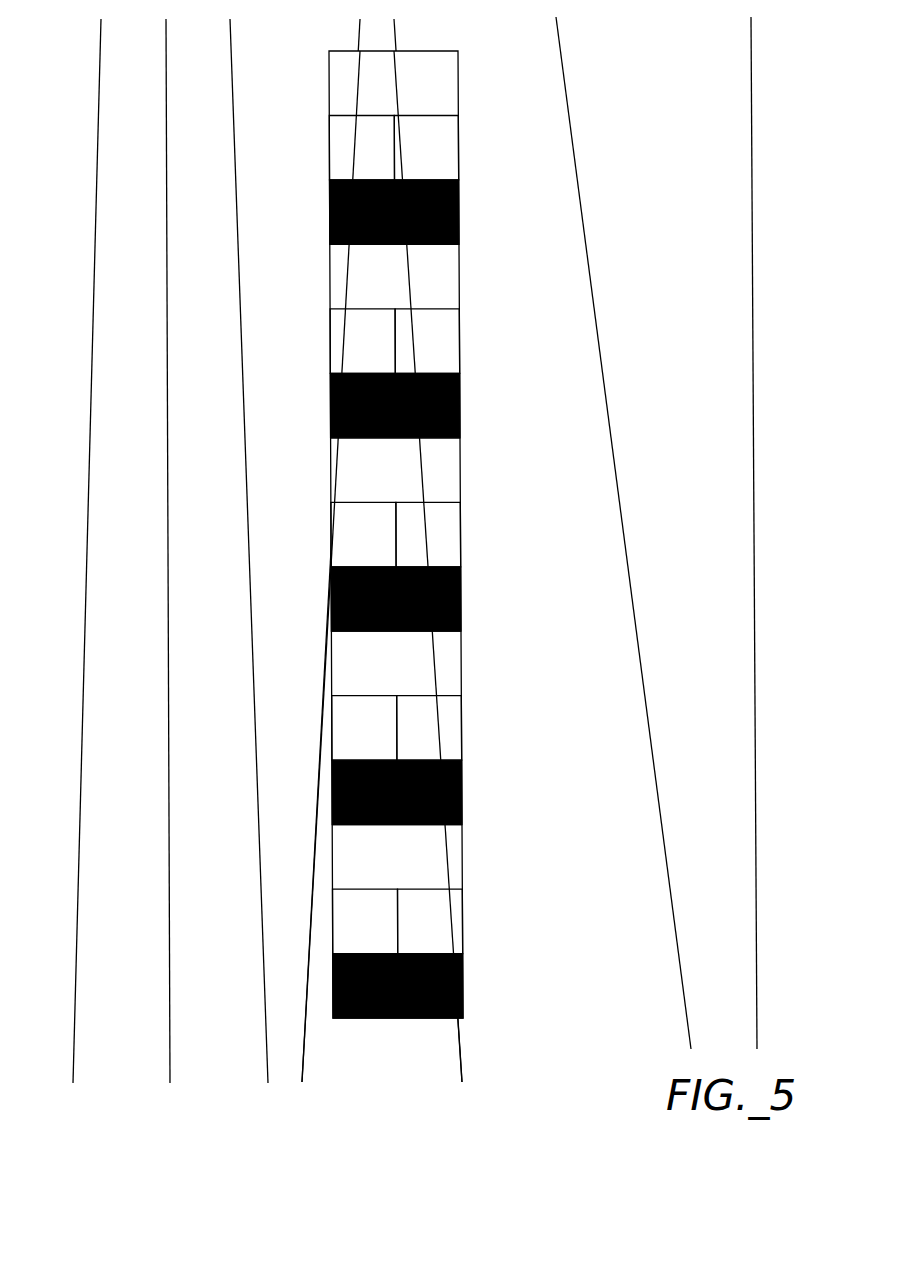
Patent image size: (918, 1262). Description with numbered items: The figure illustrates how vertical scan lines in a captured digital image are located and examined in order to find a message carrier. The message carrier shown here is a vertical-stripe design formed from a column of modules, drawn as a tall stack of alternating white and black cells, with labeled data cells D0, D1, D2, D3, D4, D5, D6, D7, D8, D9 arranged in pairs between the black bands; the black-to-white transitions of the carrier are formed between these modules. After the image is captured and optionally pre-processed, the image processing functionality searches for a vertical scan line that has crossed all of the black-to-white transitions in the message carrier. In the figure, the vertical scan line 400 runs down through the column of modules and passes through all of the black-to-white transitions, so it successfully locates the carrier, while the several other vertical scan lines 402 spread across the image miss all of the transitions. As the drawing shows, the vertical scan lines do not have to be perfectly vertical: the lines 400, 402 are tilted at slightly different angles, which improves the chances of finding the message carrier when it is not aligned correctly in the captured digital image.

The vertical scan line 400 is at (382, 574).
The vertical scan lines 402 is at (95, 242).
The data cell D0 is at (361, 148).
The data cell D1 is at (426, 148).
The data cell D2 is at (362, 341).
The data cell D3 is at (427, 341).
The data cell D4 is at (363, 534).
The data cell D5 is at (428, 534).
The data cell D6 is at (364, 728).
The data cell D7 is at (429, 728).
The data cell D8 is at (365, 921).
The data cell D9 is at (430, 921).